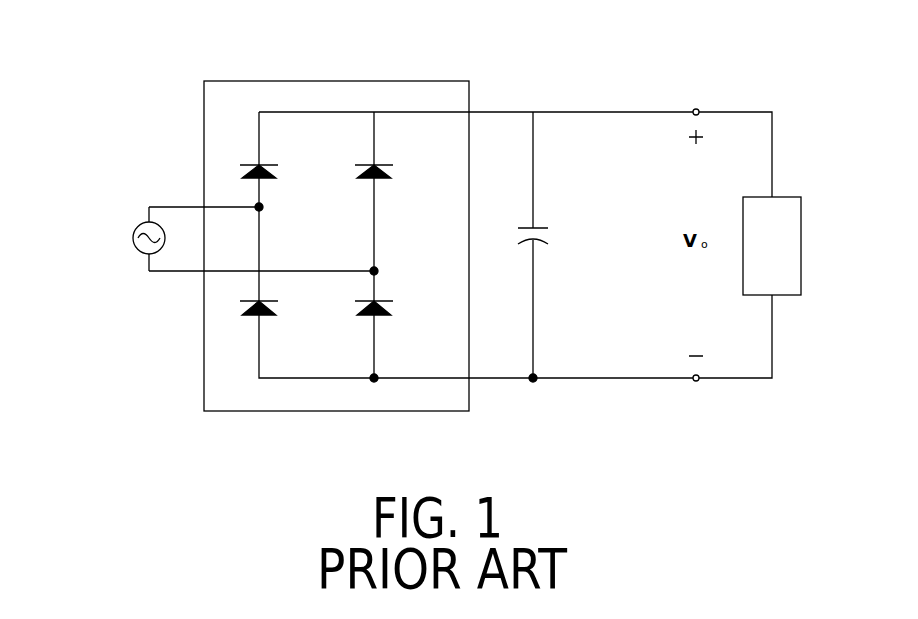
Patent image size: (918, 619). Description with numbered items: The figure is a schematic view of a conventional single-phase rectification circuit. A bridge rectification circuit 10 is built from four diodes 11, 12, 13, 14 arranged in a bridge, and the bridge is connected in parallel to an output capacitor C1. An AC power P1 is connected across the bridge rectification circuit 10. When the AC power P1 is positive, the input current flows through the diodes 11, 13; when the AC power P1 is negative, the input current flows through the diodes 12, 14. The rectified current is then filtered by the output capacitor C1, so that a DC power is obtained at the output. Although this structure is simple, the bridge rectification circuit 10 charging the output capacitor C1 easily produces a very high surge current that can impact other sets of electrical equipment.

The bridge rectification circuit 10 is at (203, 383).
The diode 11 is at (264, 160).
The diode 12 is at (385, 160).
The diode 13 is at (380, 316).
The diode 14 is at (245, 302).
The AC power P1 is at (132, 237).
The output capacitor C1 is at (542, 237).